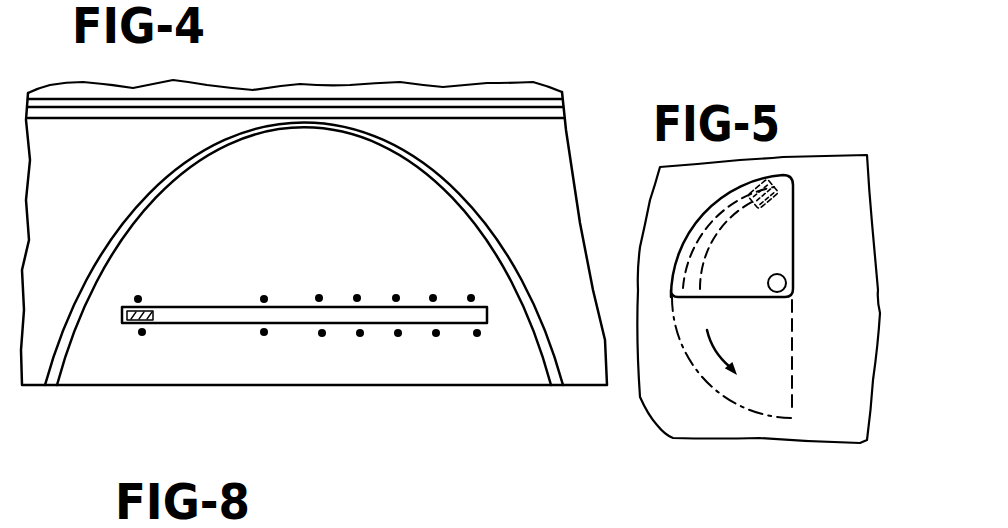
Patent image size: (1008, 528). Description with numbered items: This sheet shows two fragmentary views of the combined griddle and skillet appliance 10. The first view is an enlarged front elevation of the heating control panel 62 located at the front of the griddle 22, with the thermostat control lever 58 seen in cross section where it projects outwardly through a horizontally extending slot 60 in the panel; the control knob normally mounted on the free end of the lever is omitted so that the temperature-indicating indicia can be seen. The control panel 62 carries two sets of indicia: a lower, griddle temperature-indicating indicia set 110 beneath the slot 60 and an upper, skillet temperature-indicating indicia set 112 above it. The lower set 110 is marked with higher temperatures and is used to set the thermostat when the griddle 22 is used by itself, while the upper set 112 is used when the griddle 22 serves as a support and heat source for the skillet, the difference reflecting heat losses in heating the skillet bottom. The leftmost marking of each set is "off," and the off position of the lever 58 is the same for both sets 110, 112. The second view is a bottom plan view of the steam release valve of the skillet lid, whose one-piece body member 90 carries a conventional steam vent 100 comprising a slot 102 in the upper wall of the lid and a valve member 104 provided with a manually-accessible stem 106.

In FIG. 4, the cooking appliance 10 is at (325, 238).
In FIG. 4, the griddle 22 is at (531, 181).
In FIG. 4, the thermostat control lever 58 is at (130, 310).
In FIG. 4, the slot 60 is at (453, 323).
In FIG. 4, the heating control panel 62 is at (145, 186).
In FIG. 4, the griddle temperature-indicating indicia set 110 is at (293, 377).
In FIG. 4, the skillet temperature-indicating indicia set 112 is at (286, 256).
In FIG. 5, the body member 90 is at (827, 423).
In FIG. 5, the steam vent 100 is at (782, 251).
In FIG. 5, the slot 102 is at (702, 232).
In FIG. 5, the valve member 104 is at (772, 223).
In FIG. 5, the stem 106 is at (782, 156).